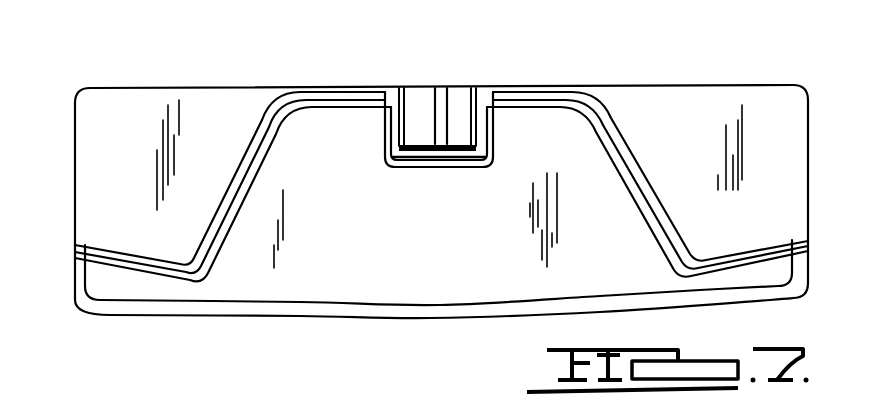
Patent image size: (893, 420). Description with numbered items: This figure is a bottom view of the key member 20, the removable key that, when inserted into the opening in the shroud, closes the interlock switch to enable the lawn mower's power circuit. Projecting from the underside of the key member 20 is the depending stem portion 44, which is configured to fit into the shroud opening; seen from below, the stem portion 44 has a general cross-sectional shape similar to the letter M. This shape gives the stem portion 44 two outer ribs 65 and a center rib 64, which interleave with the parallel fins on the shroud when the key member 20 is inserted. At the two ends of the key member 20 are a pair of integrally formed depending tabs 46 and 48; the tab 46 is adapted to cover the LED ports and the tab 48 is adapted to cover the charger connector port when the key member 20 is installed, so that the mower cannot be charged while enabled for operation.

The key member 20 is at (437, 321).
The depending stem portion 44 is at (447, 166).
The depending tab 46 is at (752, 254).
The depending tab 48 is at (118, 262).
The center rib 64 is at (436, 108).
The outer ribs 65 is at (397, 132).